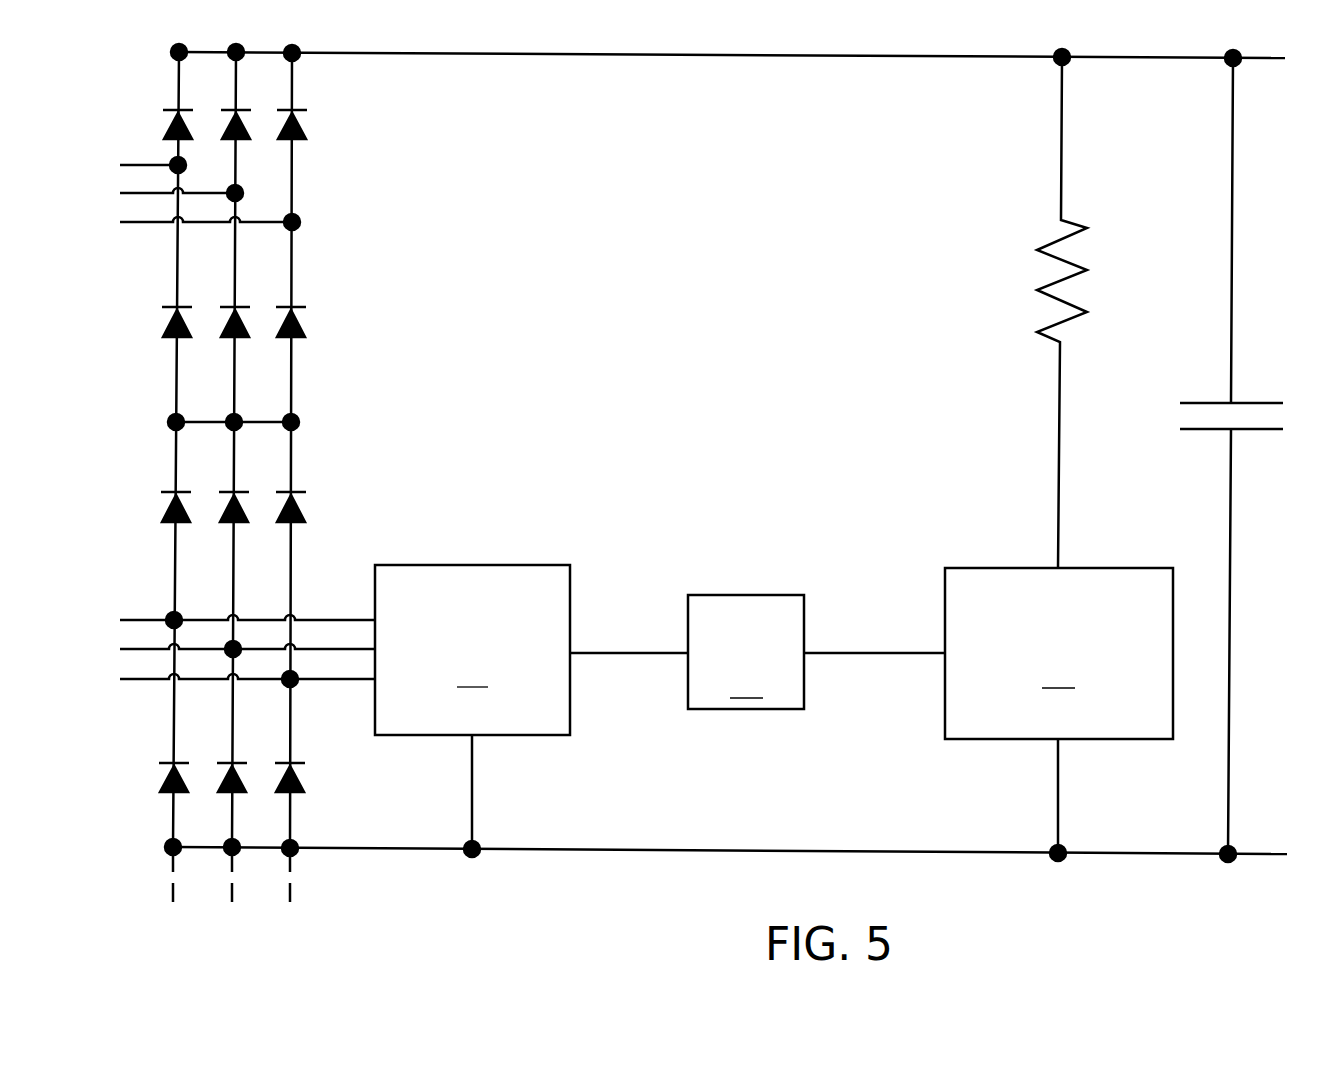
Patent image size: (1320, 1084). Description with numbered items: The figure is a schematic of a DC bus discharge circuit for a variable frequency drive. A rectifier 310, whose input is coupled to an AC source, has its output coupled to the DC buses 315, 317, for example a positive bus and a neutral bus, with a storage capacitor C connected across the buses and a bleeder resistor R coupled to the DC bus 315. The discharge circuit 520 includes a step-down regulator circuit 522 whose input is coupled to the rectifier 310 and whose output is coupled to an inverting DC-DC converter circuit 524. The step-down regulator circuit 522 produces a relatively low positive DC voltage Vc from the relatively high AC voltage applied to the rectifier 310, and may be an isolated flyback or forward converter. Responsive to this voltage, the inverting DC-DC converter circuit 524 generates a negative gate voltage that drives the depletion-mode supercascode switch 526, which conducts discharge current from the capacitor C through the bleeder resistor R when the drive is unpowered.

The DC bus 315 is at (522, 54).
The DC bus 317 is at (562, 851).
The rectifier 310 is at (372, 337).
The discharge circuit 520 is at (533, 480).
The step-down regulator circuit 522 is at (472, 650).
The inverting DC-DC converter circuit 524 is at (746, 652).
The depletion-mode supercascode switch 526 is at (1059, 653).